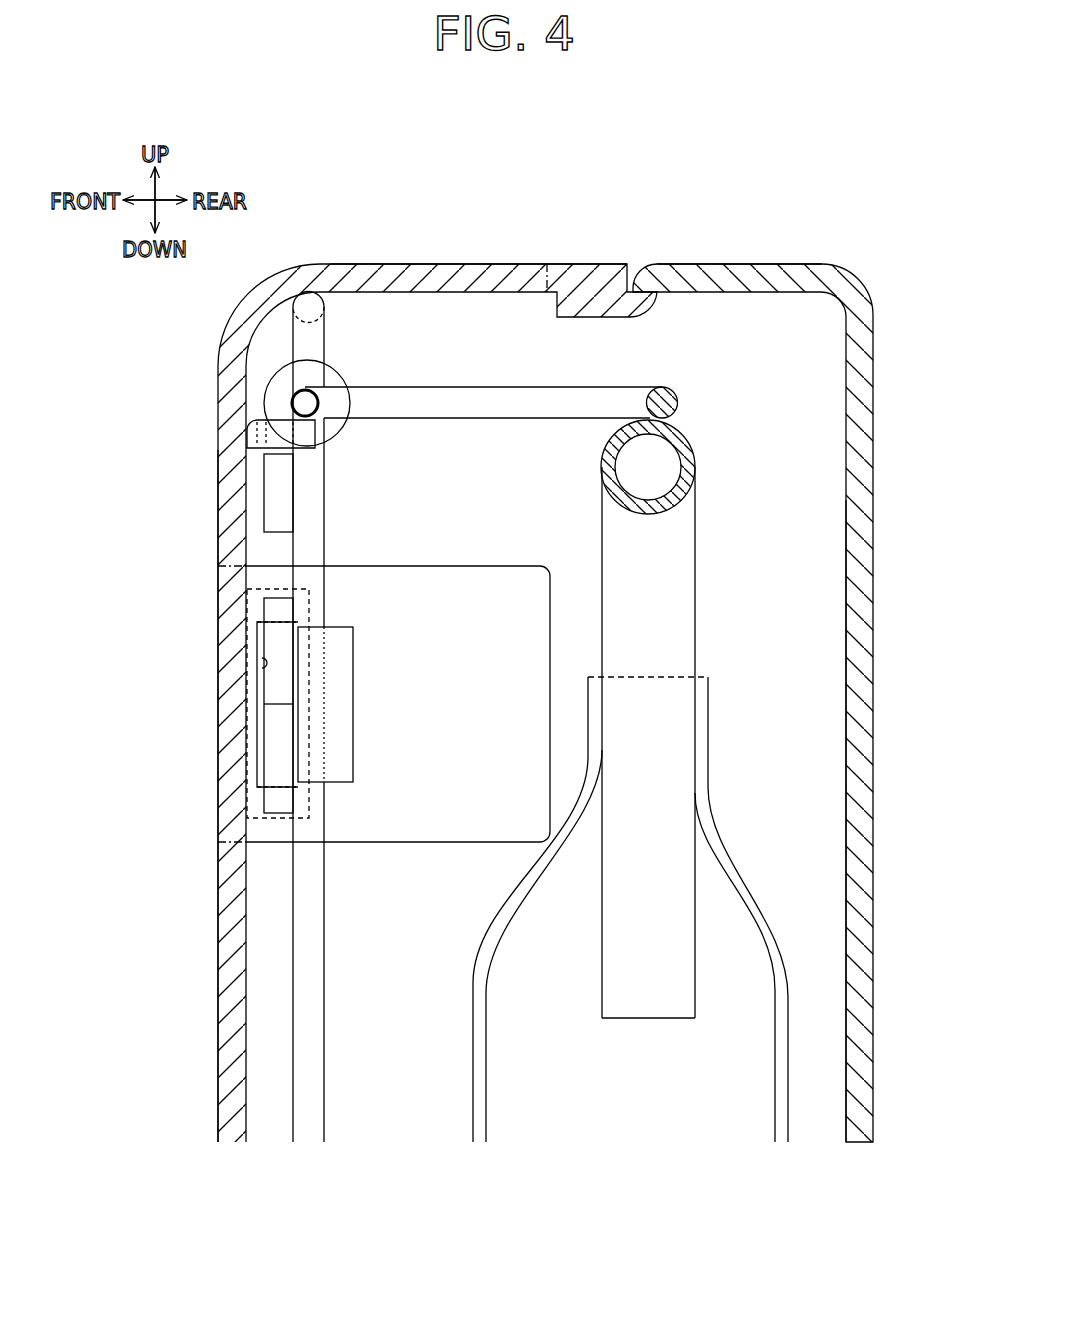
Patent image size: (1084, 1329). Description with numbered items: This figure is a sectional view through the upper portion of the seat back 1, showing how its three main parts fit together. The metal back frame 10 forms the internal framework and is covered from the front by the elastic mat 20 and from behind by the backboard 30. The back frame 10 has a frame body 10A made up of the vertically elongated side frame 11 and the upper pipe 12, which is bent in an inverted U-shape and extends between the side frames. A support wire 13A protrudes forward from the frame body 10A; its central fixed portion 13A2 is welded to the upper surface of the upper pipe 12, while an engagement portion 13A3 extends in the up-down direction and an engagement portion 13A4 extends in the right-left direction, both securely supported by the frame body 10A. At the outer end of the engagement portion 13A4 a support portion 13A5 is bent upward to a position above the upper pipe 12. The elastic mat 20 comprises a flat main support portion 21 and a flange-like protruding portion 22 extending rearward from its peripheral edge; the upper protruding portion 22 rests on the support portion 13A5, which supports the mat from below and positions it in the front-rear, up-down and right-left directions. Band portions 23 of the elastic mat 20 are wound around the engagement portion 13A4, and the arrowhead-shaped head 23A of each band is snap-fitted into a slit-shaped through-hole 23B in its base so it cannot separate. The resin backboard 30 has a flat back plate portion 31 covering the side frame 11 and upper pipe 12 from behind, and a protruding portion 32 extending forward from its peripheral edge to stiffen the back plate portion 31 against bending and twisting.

The seat back 1 is at (697, 190).
The back frame 10 is at (600, 493).
The frame body 10A is at (772, 520).
The side frame 11 is at (702, 710).
The upper pipe 12 is at (660, 505).
The support wire 13A is at (547, 386).
The fixed portion 13A2 is at (625, 407).
The engagement portion 13A3 is at (310, 888).
The engagement portion 13A4 is at (306, 404).
The support portion 13A5 is at (309, 302).
The elastic mat 20 is at (222, 486).
The main support portion 21 is at (233, 528).
The protruding portion 22 is at (604, 278).
The band portion 23 is at (335, 376).
The head 23A is at (283, 500).
The through-hole 23B is at (268, 403).
The backboard 30 is at (875, 488).
The back plate portion 31 is at (857, 592).
The protruding portion 32 is at (763, 278).